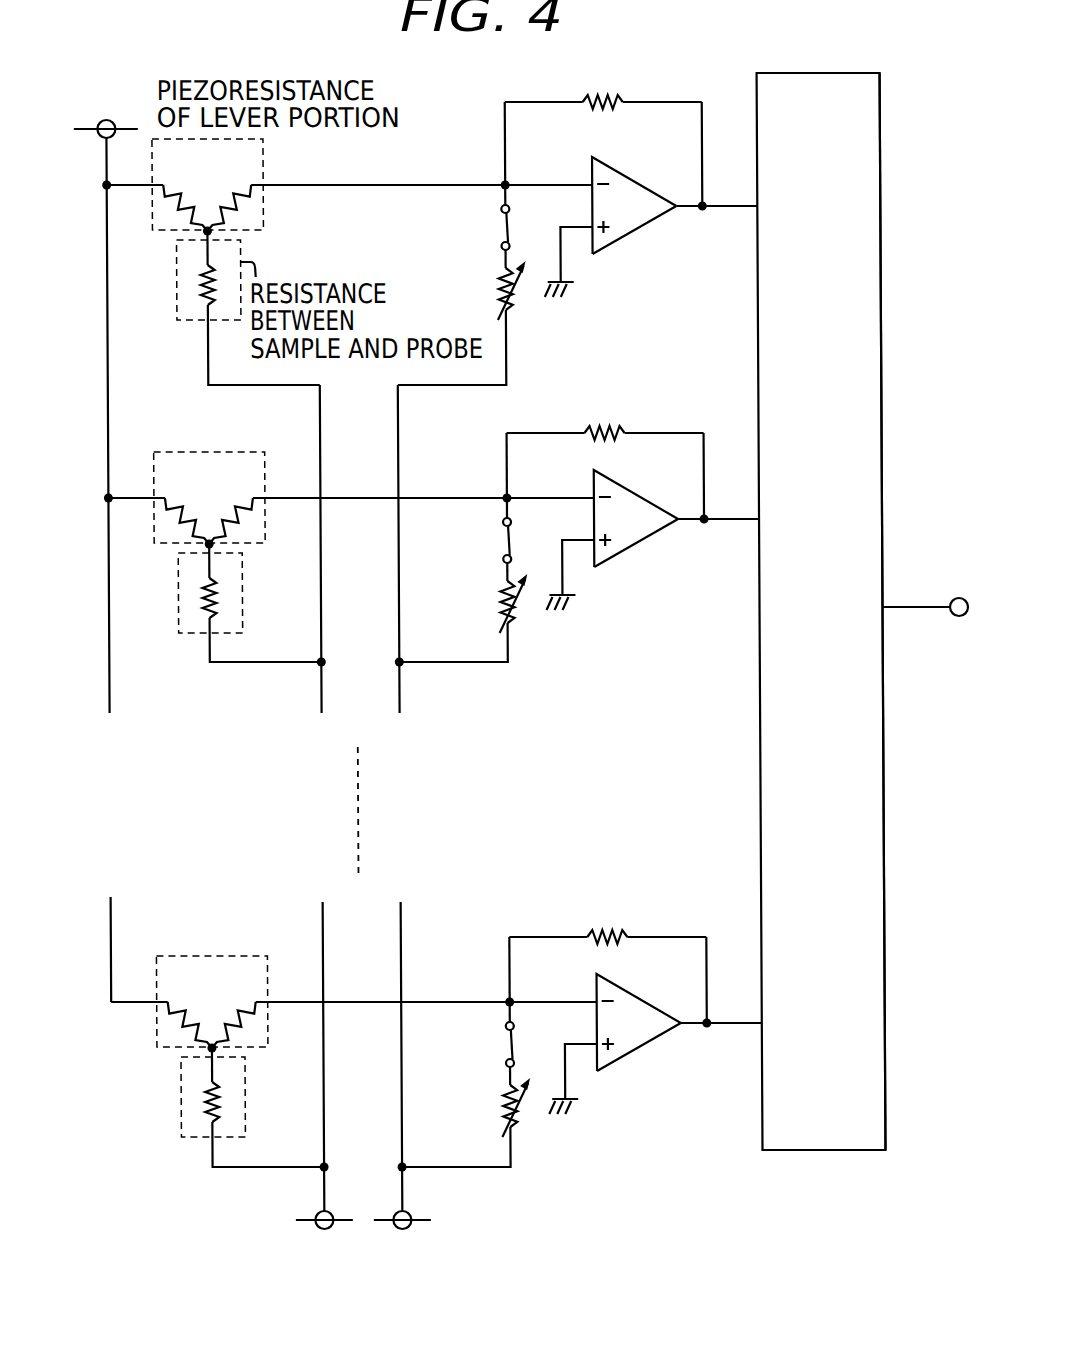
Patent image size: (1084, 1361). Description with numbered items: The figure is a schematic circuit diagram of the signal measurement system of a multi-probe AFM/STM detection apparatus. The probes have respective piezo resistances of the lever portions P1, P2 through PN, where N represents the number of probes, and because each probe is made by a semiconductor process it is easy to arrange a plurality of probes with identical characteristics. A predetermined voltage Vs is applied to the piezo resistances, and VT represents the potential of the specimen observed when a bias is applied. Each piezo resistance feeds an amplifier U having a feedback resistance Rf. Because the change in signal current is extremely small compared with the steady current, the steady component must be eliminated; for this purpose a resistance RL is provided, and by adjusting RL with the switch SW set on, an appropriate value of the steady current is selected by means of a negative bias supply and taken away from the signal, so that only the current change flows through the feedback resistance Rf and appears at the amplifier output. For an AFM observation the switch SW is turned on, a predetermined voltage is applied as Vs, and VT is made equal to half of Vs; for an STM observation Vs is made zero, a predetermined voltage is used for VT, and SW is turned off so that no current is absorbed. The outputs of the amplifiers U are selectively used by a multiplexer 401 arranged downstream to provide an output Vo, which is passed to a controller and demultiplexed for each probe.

The multiplexer 401 is at (847, 71).
The piezo resistance of the lever portion P1 is at (208, 187).
The piezo resistance of the lever portion P2 is at (210, 500).
The piezo resistance of the lever portion PN is at (212, 1004).
The switch SW is at (481, 227).
The resistance RL is at (494, 290).
The feedback resistance Rf is at (602, 84).
The amplifier U is at (634, 205).
The supply voltage Vs is at (108, 545).
The specimen potential VT is at (322, 825).
The output Vo is at (928, 590).